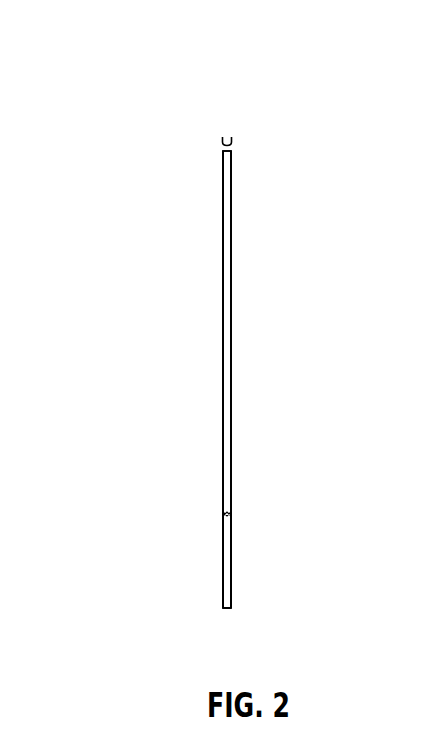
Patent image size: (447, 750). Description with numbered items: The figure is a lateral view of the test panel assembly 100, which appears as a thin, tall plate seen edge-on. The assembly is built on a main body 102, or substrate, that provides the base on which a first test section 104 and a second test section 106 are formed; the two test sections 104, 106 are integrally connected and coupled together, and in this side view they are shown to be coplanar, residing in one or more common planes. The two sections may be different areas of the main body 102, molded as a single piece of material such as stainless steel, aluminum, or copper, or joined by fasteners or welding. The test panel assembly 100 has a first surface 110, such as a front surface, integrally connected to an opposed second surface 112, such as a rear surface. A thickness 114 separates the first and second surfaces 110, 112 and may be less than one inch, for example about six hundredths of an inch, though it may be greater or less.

The test panel assembly 100 is at (150, 164).
The main body 102 is at (252, 270).
The first test section 104 is at (223, 312).
The second test section 106 is at (231, 552).
The first surface 110 is at (223, 245).
The second surface 112 is at (231, 402).
The thickness 114 is at (226, 137).